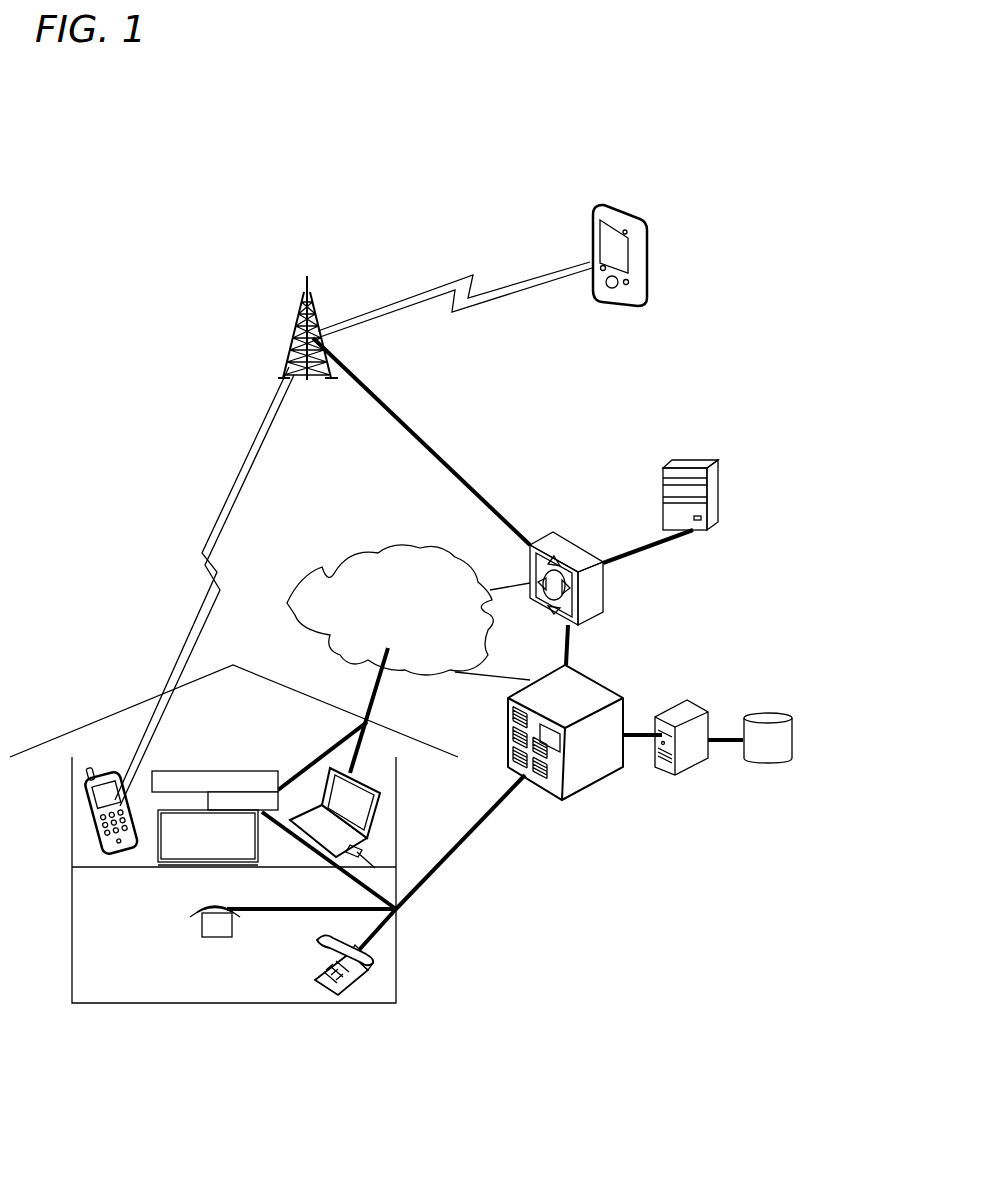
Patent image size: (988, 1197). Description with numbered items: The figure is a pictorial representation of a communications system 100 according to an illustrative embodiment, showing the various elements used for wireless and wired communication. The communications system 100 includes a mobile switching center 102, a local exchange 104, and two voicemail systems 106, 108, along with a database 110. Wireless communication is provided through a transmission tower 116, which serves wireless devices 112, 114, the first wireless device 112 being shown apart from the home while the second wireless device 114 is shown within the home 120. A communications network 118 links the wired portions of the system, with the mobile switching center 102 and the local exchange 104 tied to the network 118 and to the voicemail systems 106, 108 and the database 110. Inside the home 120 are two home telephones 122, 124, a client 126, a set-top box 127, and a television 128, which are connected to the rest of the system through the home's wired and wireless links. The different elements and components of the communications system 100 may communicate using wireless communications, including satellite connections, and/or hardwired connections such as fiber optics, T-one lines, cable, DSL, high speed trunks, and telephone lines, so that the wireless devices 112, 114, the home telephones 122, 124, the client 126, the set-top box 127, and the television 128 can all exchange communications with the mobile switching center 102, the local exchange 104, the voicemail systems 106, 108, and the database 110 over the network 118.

The communications system 100 is at (145, 206).
The mobile switching center 102 is at (553, 532).
The local exchange 104 is at (570, 800).
The voicemail system 106 is at (686, 460).
The voicemail system 108 is at (768, 714).
The database 110 is at (687, 700).
The wireless device 112 is at (672, 255).
The wireless device 114 is at (93, 812).
The transmission tower 116 is at (290, 364).
The communications network 118 is at (373, 631).
The home 120 is at (124, 668).
The home telephone 122 is at (367, 970).
The home telephone 124 is at (213, 920).
The client 126 is at (385, 830).
The set-top box 127 is at (237, 771).
The television 128 is at (208, 837).